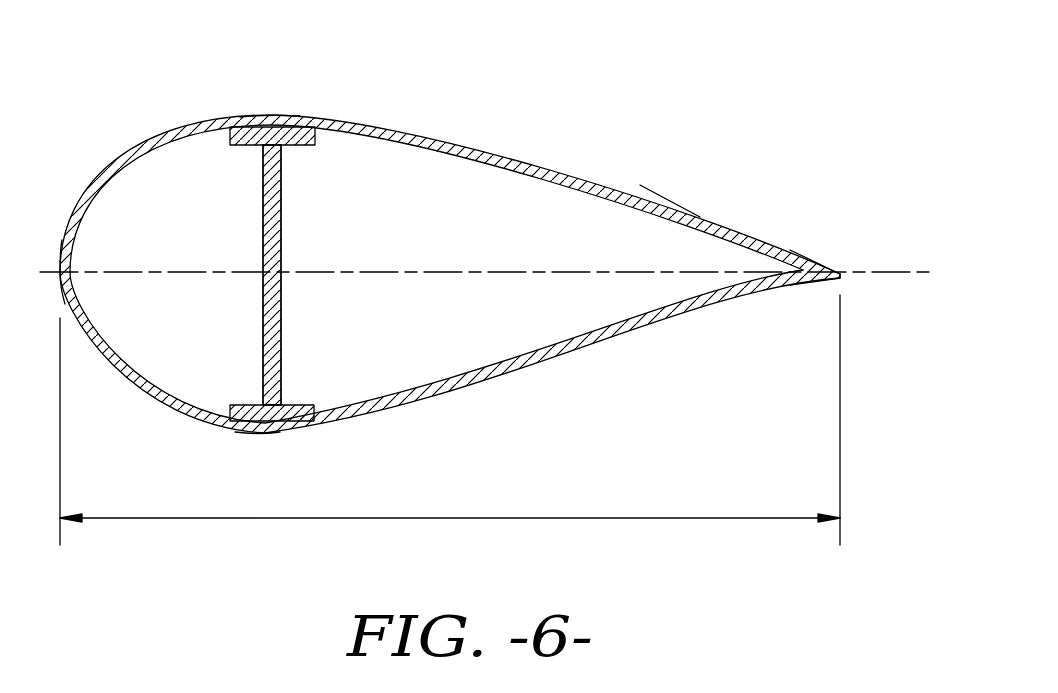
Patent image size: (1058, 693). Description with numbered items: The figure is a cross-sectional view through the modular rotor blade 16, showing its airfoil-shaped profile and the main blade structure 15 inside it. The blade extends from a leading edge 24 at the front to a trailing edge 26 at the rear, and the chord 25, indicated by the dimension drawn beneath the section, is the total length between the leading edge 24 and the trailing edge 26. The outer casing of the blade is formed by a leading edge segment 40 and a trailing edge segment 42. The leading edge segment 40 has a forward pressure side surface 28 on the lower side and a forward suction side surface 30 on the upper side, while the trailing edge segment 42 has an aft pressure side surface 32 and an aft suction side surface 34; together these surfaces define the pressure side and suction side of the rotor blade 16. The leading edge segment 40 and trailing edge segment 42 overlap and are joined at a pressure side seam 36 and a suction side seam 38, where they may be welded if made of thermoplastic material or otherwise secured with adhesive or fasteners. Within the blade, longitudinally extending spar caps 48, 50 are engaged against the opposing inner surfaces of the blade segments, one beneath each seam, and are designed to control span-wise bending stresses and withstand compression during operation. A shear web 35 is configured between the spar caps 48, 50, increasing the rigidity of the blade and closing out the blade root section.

The main blade structure 15 is at (263, 362).
The rotor blade 16 is at (710, 80).
The leading edge 24 is at (58, 271).
The chord 25 is at (581, 519).
The trailing edge 26 is at (841, 274).
The forward pressure side surface 28 is at (147, 400).
The forward suction side surface 30 is at (147, 147).
The aft pressure side surface 32 is at (523, 360).
The aft suction side surface 34 is at (517, 157).
The shear web 35 is at (260, 240).
The pressure side seam 36 is at (257, 434).
The suction side seam 38 is at (292, 115).
The leading edge segment 40 is at (82, 188).
The trailing edge segment 42 is at (662, 210).
The spar cap 48 is at (293, 404).
The spar cap 50 is at (290, 148).